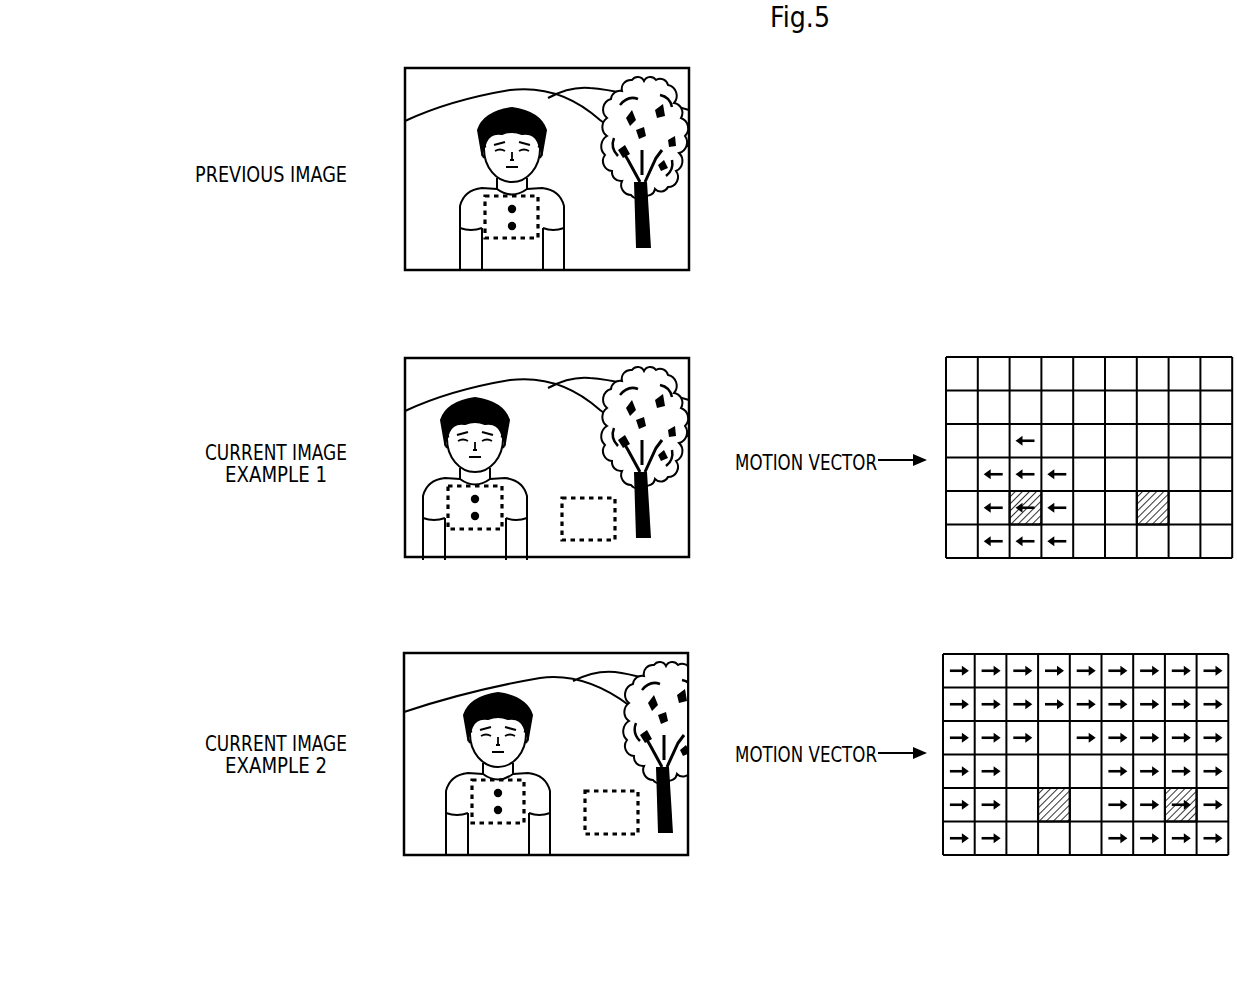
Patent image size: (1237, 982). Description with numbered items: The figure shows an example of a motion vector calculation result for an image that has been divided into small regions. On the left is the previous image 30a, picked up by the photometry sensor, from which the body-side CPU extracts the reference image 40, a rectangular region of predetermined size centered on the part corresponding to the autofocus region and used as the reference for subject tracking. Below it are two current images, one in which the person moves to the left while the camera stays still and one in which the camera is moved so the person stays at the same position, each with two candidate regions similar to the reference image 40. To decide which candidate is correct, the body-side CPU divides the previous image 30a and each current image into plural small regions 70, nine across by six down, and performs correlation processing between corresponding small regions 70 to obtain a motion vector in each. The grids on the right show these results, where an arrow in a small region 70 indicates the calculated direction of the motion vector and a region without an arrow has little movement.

The previous image 30a is at (547, 163).
The reference image 40 is at (512, 239).
The small region 70 is at (1061, 477).